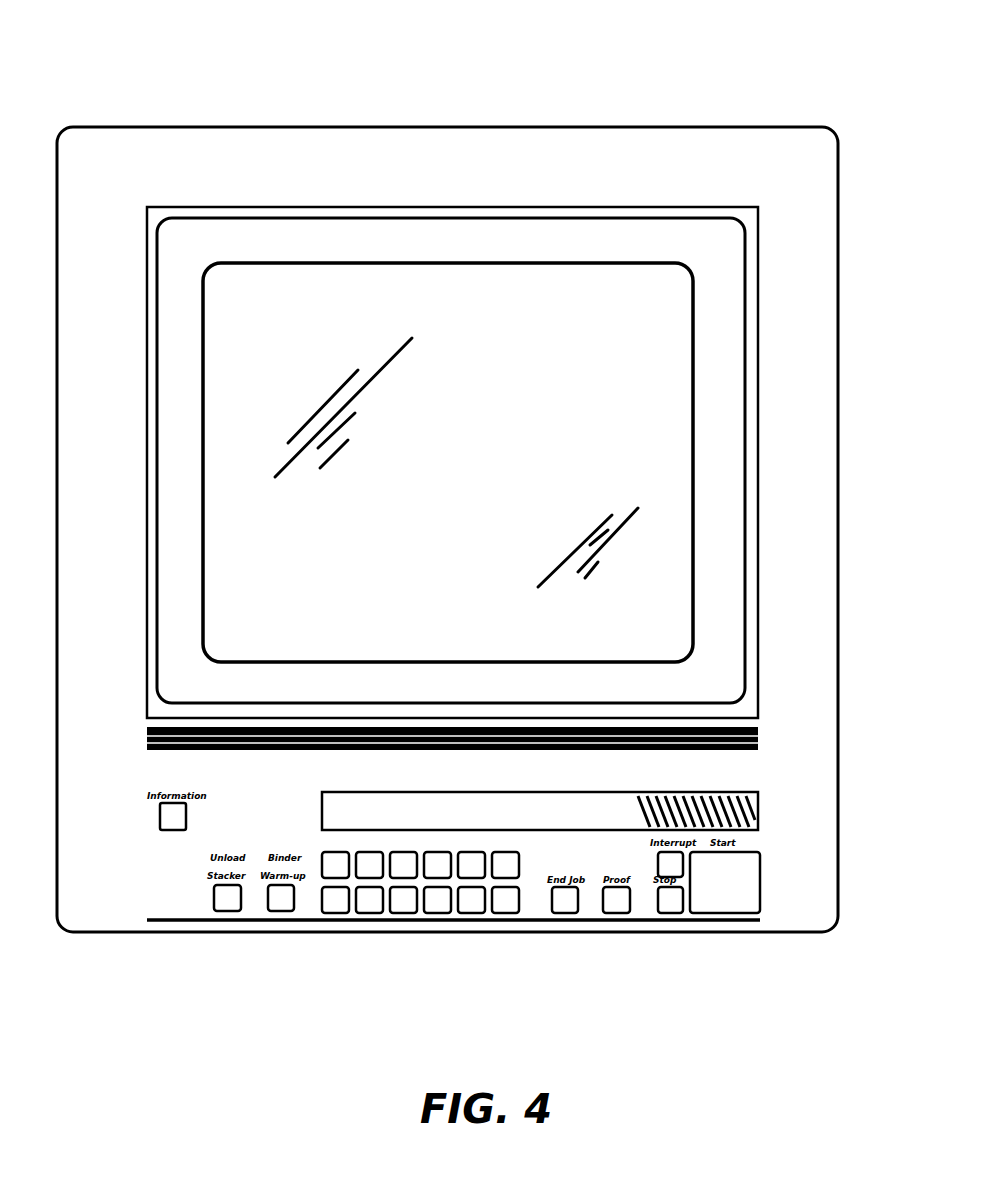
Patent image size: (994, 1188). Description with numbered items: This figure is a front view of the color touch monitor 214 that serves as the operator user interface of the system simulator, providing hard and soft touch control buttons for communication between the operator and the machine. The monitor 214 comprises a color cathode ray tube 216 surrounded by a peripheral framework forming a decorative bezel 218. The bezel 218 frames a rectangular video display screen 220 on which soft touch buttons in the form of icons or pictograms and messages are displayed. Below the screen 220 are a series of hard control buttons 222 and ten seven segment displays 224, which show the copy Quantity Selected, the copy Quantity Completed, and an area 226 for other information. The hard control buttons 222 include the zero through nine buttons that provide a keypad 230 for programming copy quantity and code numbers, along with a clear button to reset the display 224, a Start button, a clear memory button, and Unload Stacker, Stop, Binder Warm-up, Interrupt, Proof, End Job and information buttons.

The color touch monitor 214 is at (472, 102).
The color cathode ray tube 216 is at (588, 280).
The decorative bezel 218 is at (812, 197).
The video display screen 220 is at (655, 280).
The hard control buttons 222 is at (382, 882).
The seven segment displays 224 is at (447, 792).
The area for other information 226 is at (757, 820).
The keypad 230 is at (516, 927).